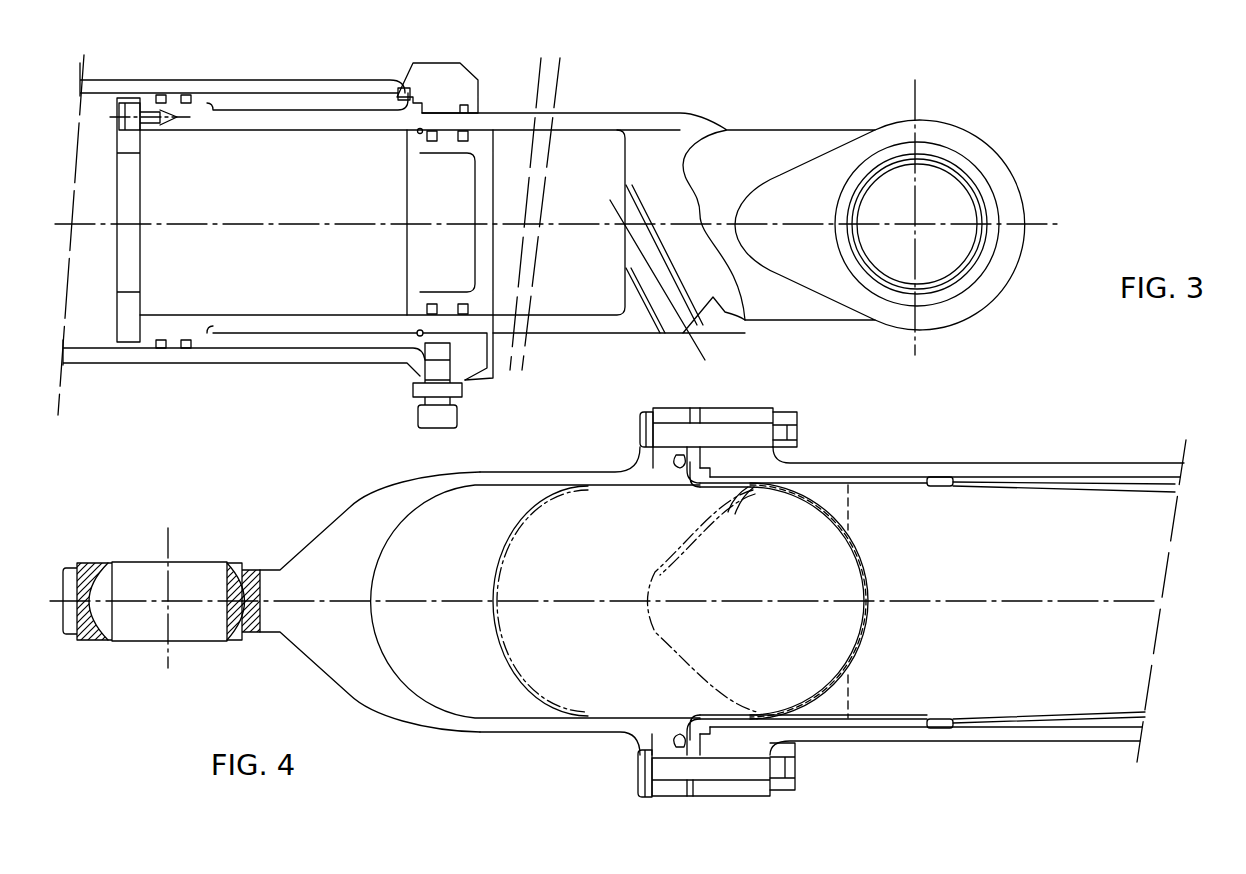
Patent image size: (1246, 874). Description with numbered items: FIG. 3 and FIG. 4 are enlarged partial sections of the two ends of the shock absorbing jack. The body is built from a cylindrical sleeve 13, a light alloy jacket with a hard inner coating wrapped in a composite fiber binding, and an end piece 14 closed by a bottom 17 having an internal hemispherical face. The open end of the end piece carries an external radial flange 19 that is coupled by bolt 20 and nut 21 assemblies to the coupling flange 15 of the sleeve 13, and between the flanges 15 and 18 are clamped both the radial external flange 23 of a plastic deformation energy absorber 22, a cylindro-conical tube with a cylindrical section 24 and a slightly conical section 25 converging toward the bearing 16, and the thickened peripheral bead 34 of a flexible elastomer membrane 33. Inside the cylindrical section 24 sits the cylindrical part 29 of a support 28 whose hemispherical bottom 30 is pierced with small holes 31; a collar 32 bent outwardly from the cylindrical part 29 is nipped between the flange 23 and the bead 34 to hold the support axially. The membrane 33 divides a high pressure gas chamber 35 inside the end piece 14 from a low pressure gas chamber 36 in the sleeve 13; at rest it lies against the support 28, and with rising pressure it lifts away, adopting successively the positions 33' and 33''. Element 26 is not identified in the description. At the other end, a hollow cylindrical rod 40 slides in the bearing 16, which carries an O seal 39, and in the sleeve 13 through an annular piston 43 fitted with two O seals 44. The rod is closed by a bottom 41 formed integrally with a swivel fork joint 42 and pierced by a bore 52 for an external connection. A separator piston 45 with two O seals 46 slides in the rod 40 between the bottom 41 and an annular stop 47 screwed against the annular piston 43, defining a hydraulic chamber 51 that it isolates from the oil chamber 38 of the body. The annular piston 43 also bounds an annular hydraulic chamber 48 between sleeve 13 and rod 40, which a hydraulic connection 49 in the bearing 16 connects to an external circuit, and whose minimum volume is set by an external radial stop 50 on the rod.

In FIG. 3, the cylindrical sleeve 13 is at (248, 88).
In FIG. 4, the cylindrical sleeve 13 is at (1007, 468).
In FIG. 4, the end piece 14 is at (500, 735).
In FIG. 4, the radial external coupling flange 15 is at (740, 408).
In FIG. 3, the bearing 16 is at (447, 92).
In FIG. 4, the bottom 17 is at (333, 640).
In FIG. 4, the flange 18 is at (667, 790).
In FIG. 4, the external radial flange 19 is at (232, 590).
In FIG. 4, the bolt 20 is at (640, 436).
In FIG. 4, the nut 21 is at (780, 415).
In FIG. 4, the plastic deformation energy absorber 22 is at (1027, 716).
In FIG. 4, the radial external flange 23 is at (692, 408).
In FIG. 4, the cylindrical section 24 is at (833, 727).
In FIG. 4, the truncated cone shaped section 25 is at (1105, 490).
In FIG. 4, the bead 26 is at (940, 478).
In FIG. 4, the support 28 is at (878, 633).
In FIG. 4, the cylindrical part 29 is at (730, 490).
In FIG. 4, the hemispherical bottom 30 is at (853, 543).
In FIG. 4, the small holes 31 is at (870, 585).
In FIG. 4, the collar 32 is at (685, 468).
In FIG. 4, the membrane 33 is at (807, 601).
In FIG. 4, the membrane position 33' is at (670, 601).
In FIG. 4, the membrane position 33'' is at (505, 601).
In FIG. 4, the peripheral thickened bead 34 is at (677, 470).
In FIG. 4, the high pressure gas chamber 35 is at (426, 573).
In FIG. 4, the low pressure gas chamber 36 is at (1055, 656).
In FIG. 3, the hydraulic oil chamber 38 is at (93, 140).
In FIG. 3, the O seal 39 is at (517, 122).
In FIG. 3, the hollow cylindrical rod 40 is at (563, 120).
In FIG. 3, the bottom 41 is at (663, 140).
In FIG. 3, the swivel fork joint 42 is at (955, 173).
In FIG. 3, the annular piston 43 is at (197, 338).
In FIG. 3, the O seals 44 is at (187, 97).
In FIG. 3, the separator piston 45 is at (483, 243).
In FIG. 3, the O seals 46 is at (463, 142).
In FIG. 3, the annular stop 47 is at (128, 327).
In FIG. 3, the hydraulic annular chamber 48 is at (313, 100).
In FIG. 3, the hydraulic connection 49 is at (432, 370).
In FIG. 3, the external radial stop 50 is at (410, 92).
In FIG. 3, the hydraulic chamber 51 is at (556, 198).
In FIG. 3, the bore 52 is at (652, 290).